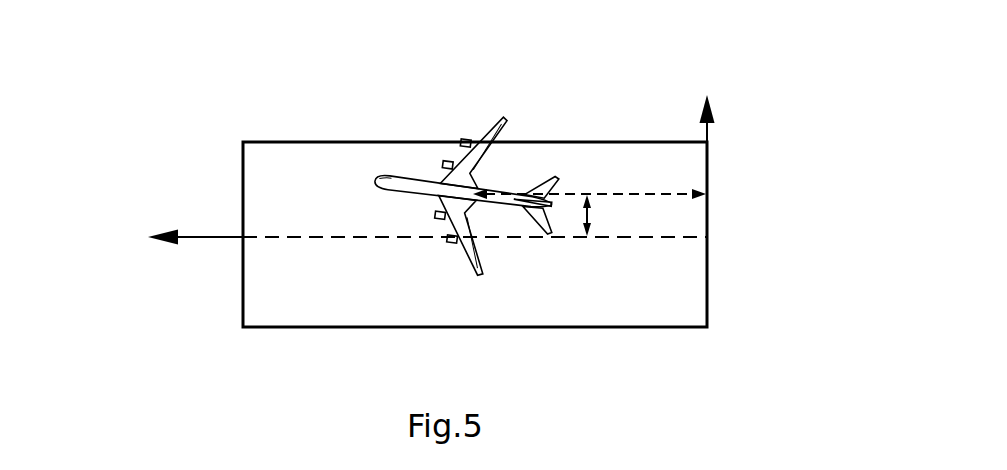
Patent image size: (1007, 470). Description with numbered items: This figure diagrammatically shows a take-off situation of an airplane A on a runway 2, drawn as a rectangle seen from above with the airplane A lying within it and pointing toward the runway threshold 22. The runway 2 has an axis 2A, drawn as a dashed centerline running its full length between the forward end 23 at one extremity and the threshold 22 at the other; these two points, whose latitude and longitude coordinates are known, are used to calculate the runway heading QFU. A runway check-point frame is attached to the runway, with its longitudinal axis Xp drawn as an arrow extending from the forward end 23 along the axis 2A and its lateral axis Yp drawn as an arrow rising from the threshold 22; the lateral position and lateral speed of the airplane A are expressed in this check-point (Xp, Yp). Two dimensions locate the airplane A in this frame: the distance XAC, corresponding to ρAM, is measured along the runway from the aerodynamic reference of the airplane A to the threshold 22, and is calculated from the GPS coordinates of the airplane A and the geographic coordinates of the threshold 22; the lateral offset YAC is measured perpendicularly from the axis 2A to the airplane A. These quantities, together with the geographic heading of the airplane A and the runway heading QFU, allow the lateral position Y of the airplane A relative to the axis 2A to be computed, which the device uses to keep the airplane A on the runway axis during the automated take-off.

The runway 2 is at (605, 328).
The axis of the runway 2A is at (328, 240).
The threshold of the runway 22 is at (714, 228).
The forward end of the runway 23 is at (238, 230).
The airplane A is at (466, 170).
The longitudinal axis of the runway check-point Xp is at (193, 241).
The lateral axis of the runway check-point Yp is at (710, 128).
The distance of the airplane from the runway threshold XAC is at (589, 182).
The lateral position of the airplane YAC is at (614, 215).